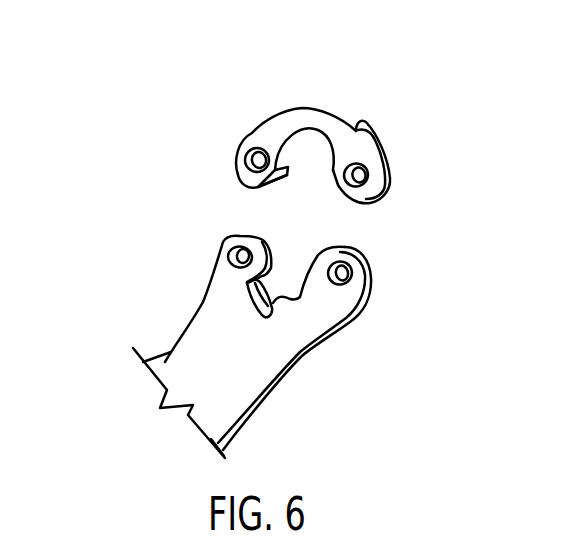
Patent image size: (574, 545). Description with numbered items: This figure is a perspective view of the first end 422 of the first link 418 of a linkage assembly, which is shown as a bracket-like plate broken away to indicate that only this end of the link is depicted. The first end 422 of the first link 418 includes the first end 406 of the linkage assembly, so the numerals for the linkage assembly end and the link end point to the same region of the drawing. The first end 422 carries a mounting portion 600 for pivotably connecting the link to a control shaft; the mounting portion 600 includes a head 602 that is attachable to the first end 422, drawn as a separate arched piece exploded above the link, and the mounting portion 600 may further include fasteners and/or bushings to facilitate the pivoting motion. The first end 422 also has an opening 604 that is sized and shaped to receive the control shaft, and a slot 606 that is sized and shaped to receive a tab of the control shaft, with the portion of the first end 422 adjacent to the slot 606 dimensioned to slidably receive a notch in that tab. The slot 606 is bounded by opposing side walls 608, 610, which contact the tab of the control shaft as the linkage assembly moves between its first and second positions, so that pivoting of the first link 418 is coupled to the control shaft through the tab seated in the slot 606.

The mounting portion 600 is at (394, 217).
The head 602 is at (317, 112).
The opening 604 is at (313, 185).
The slot 606 is at (276, 283).
The side wall 608 is at (251, 289).
The side wall 610 is at (260, 317).
The first link 418 is at (173, 361).
The first end of the linkage assembly 406 is at (352, 370).
The first end 422 is at (208, 333).